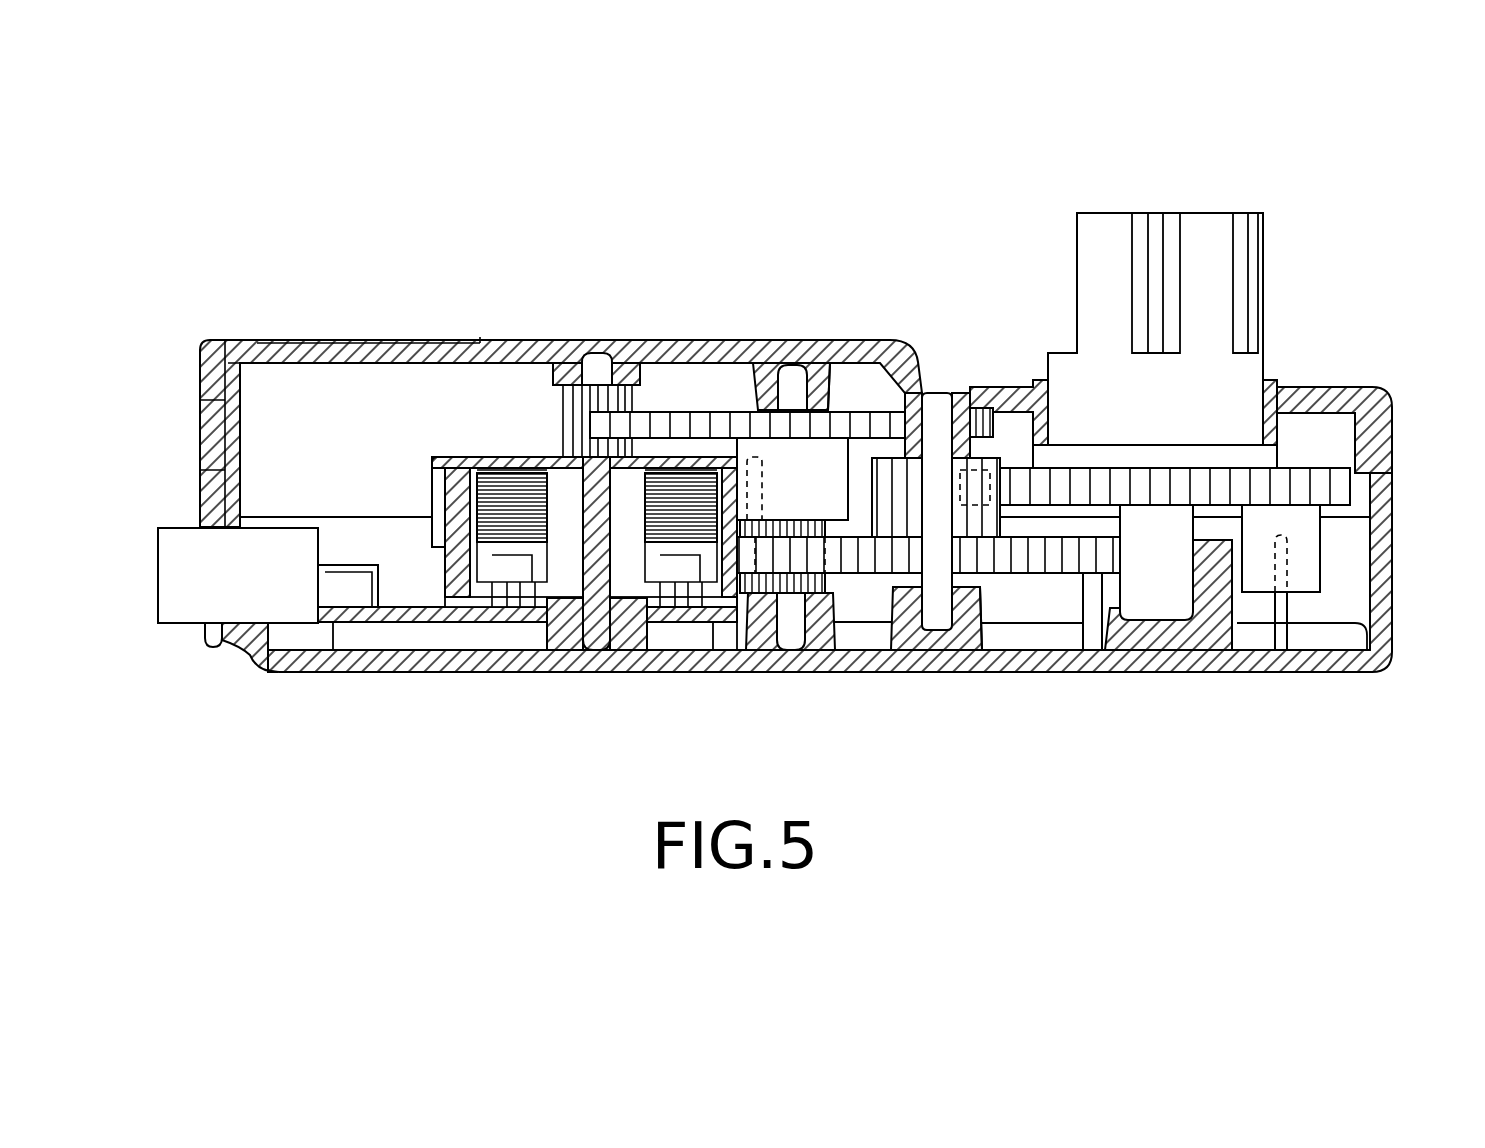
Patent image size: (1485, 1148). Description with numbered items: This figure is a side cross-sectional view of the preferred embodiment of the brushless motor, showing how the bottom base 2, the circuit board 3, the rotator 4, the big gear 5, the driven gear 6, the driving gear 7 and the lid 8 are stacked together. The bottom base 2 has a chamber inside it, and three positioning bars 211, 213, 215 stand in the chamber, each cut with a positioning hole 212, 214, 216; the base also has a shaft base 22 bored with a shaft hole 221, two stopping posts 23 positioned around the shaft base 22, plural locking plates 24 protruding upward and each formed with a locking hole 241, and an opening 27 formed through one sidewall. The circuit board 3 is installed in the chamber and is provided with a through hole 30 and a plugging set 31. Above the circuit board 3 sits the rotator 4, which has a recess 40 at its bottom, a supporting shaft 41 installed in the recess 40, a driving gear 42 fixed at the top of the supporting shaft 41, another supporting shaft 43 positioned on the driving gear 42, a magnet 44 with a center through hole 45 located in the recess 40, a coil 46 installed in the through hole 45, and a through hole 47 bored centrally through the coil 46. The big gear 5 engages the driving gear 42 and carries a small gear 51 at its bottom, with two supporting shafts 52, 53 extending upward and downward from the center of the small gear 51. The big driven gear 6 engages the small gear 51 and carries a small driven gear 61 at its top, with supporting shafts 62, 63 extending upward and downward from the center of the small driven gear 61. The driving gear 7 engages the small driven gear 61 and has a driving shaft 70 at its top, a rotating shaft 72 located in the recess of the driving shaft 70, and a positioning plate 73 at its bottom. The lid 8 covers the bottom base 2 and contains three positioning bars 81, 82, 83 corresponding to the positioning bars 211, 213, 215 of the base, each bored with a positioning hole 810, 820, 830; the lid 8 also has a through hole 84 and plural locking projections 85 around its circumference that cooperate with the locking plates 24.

The bottom base 2 is at (283, 672).
The circuit board 3 is at (368, 612).
The rotator 4 is at (460, 476).
The big gear 5 is at (712, 420).
The driven gear 6 is at (1062, 555).
The driving gear 7 is at (1330, 485).
The lid 8 is at (310, 357).
The shaft base 22 is at (1210, 587).
The stopping post 23 is at (1280, 628).
The locking plate 24 is at (213, 380).
The opening 27 is at (223, 627).
The through hole 30 is at (545, 617).
The plugging set 31 is at (190, 595).
The recess 40 is at (440, 490).
The supporting shaft 41 is at (588, 605).
The driving gear 42 is at (560, 430).
The supporting shaft 43 is at (598, 370).
The magnet 44 is at (455, 553).
The center through hole 45 is at (482, 588).
The coil 46 is at (507, 515).
The through hole 47 is at (628, 522).
The small gear 51 is at (862, 578).
The supporting shaft 52 is at (793, 630).
The supporting shaft 53 is at (793, 380).
The small driven gear 61 is at (975, 517).
The supporting shaft 62 is at (932, 612).
The supporting shaft 63 is at (937, 418).
The driving shaft 70 is at (1205, 250).
The rotating shaft 72 is at (1158, 595).
The positioning plate 73 is at (1303, 555).
The positioning bar 81 is at (572, 372).
The positioning bar 82 is at (768, 378).
The positioning bar 83 is at (910, 393).
The through hole 84 is at (1280, 390).
The locking projection 85 is at (220, 415).
The positioning bar 211 is at (630, 618).
The positioning hole 212 is at (600, 650).
The positioning bar 213 is at (760, 620).
The positioning hole 214 is at (808, 615).
The positioning bar 215 is at (962, 610).
The positioning hole 216 is at (910, 612).
The shaft hole 221 is at (1133, 622).
The locking hole 241 is at (212, 462).
The positioning hole 810 is at (620, 368).
The positioning hole 820 is at (822, 385).
The positioning hole 830 is at (965, 440).